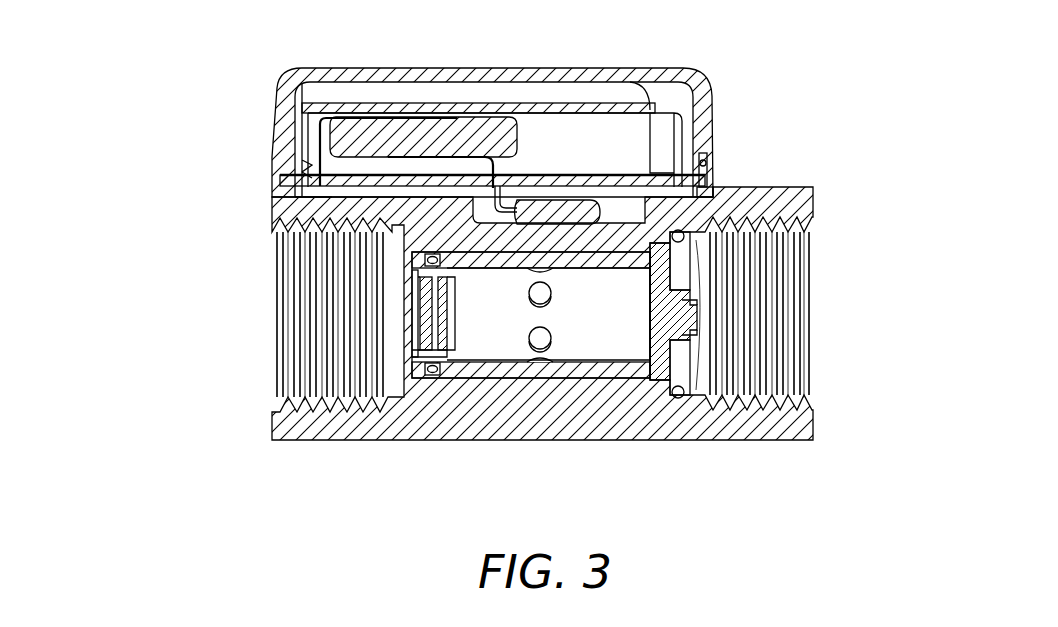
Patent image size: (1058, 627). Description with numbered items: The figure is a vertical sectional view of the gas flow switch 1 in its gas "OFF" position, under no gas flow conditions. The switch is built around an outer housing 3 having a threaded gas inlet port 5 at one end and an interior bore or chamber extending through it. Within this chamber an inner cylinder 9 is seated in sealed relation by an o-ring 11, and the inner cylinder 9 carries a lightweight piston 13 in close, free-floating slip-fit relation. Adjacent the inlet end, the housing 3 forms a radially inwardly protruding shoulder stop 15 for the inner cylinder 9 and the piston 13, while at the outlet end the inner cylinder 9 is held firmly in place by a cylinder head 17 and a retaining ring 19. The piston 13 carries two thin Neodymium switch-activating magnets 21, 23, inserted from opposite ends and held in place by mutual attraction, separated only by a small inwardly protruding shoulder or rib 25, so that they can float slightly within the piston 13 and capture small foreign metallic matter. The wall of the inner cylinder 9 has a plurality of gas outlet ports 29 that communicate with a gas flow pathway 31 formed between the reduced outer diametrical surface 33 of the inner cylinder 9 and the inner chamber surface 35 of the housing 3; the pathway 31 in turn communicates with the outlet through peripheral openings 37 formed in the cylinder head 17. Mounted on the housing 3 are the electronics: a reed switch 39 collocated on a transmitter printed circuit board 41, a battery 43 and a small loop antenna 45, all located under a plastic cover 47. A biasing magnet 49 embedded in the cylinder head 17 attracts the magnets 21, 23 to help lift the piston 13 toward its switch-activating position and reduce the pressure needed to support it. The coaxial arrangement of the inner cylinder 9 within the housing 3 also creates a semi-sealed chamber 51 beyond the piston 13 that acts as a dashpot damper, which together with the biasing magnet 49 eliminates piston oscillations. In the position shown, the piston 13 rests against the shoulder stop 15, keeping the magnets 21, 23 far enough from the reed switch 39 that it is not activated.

The gas flow switch 1 is at (200, 129).
The outer housing 3 is at (807, 200).
The threaded gas inlet port 5 is at (273, 230).
The inner cylinder 9 is at (441, 352).
The o-ring 11 is at (435, 372).
The piston 13 is at (433, 352).
The shoulder stop 15 is at (412, 283).
The cylinder head 17 is at (663, 300).
The retaining ring 19 is at (705, 218).
The switch-activating magnet 21 is at (452, 362).
The switch-activating magnet 23 is at (428, 347).
The shoulder or rib 25 is at (426, 358).
The gas outlet ports 29 is at (541, 340).
The gas flow pathway 31 is at (700, 237).
The reduced outer diametrical surface 33 is at (566, 362).
The inner chamber surface 35 is at (625, 370).
The peripheral openings 37 is at (680, 400).
The reed switch 39 is at (702, 188).
The transmitter printed circuit board 41 is at (573, 173).
The battery 43 is at (415, 133).
The loop antenna 45 is at (565, 108).
The plastic cover 47 is at (290, 80).
The biasing magnet 49 is at (680, 310).
The semi-sealed chamber 51 is at (610, 320).